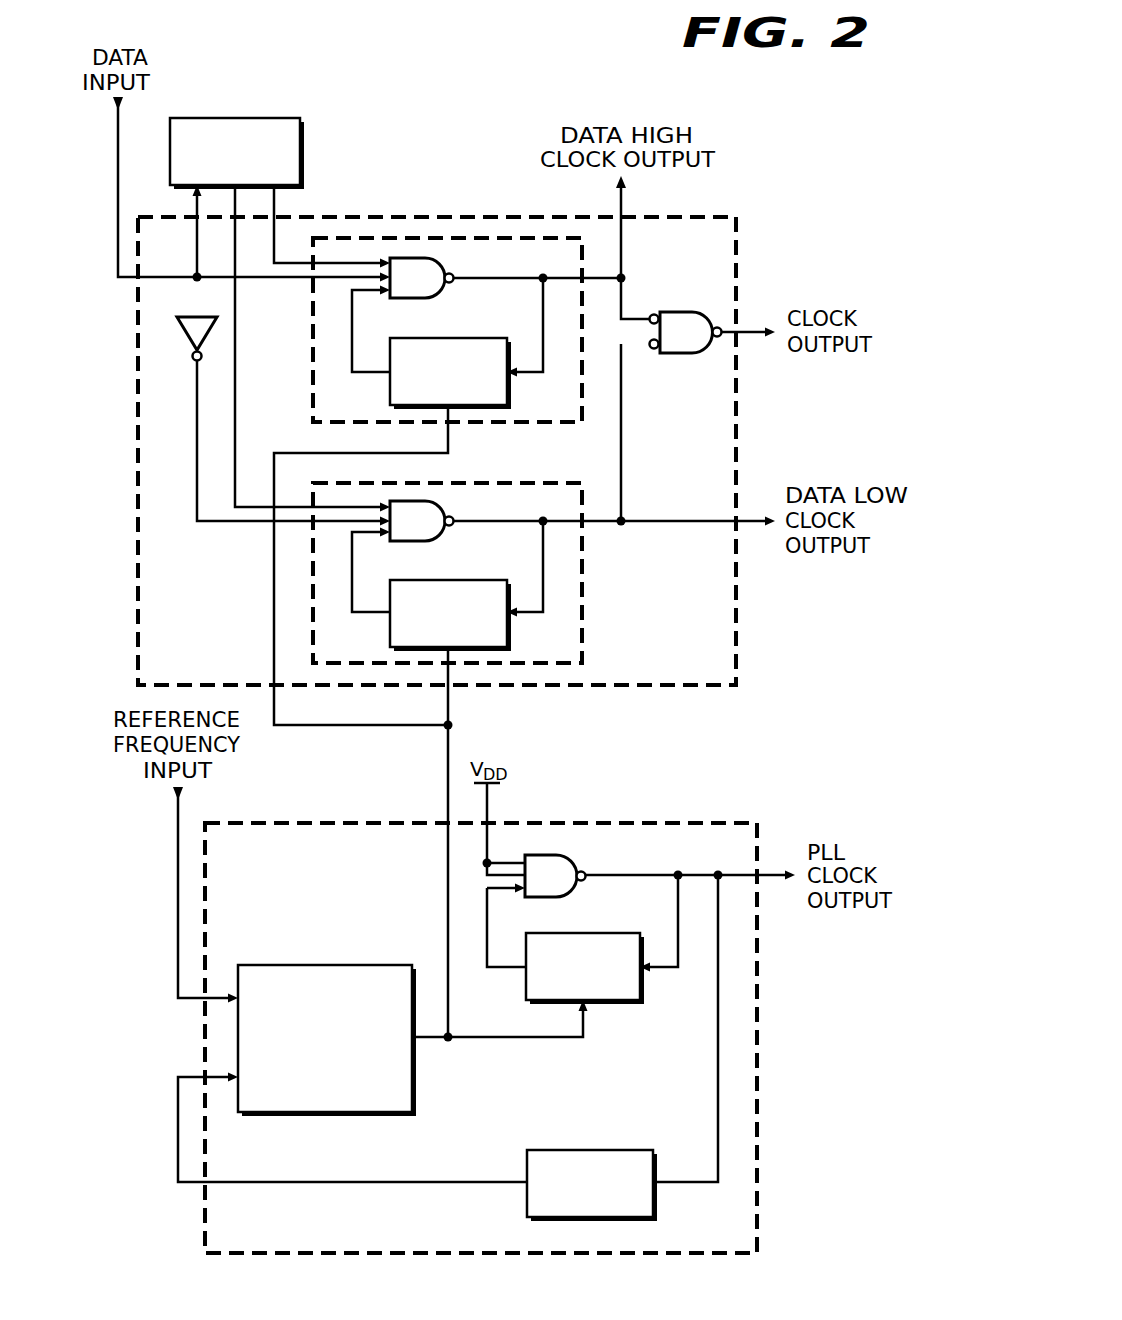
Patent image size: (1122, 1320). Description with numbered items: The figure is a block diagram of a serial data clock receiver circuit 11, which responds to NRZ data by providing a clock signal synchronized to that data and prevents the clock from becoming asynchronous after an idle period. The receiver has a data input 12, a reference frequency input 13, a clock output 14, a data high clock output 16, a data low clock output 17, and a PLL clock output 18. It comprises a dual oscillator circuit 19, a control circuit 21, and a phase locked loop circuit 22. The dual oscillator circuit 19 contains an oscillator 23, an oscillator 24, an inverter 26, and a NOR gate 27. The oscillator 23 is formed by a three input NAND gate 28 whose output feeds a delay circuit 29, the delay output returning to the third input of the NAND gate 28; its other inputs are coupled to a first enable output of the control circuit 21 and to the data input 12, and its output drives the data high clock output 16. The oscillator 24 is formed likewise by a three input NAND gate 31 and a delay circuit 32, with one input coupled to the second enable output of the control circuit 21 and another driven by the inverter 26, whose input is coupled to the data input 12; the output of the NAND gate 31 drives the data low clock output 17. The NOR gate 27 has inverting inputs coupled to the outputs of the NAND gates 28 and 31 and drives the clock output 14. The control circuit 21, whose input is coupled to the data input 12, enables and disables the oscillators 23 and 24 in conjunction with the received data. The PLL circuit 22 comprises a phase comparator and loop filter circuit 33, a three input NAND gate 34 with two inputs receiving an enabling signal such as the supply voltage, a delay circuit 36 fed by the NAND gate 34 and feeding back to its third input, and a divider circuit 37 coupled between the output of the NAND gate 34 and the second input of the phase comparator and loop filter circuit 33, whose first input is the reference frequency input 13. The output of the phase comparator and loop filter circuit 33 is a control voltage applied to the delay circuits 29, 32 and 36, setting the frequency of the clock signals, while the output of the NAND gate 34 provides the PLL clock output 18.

The serial data clock receiver circuit 11 is at (810, 144).
The data input 12 is at (120, 124).
The reference frequency input 13 is at (176, 830).
The clock output 14 is at (758, 338).
The data high clock output 16 is at (619, 199).
The data low clock output 17 is at (753, 530).
The phase lock loop (PLL) clock output 18 is at (778, 873).
The dual oscillator circuit 19 is at (413, 217).
The control circuit 21 is at (304, 162).
The phase locked loop (PLL) circuit 22 is at (622, 823).
The oscillator 23 is at (497, 424).
The oscillator 24 is at (584, 629).
The inverter 26 is at (182, 322).
The NOR gate 27 is at (700, 355).
The three input NAND gate 28 is at (436, 297).
The delay circuit 29 is at (512, 392).
The three input NAND gate 31 is at (436, 540).
The delay circuit 32 is at (512, 635).
The phase comparator and loop filter circuit 33 is at (333, 965).
The three input NAND gate 34 is at (570, 896).
The delay circuit 36 is at (620, 1003).
The divider circuit 37 is at (563, 1150).